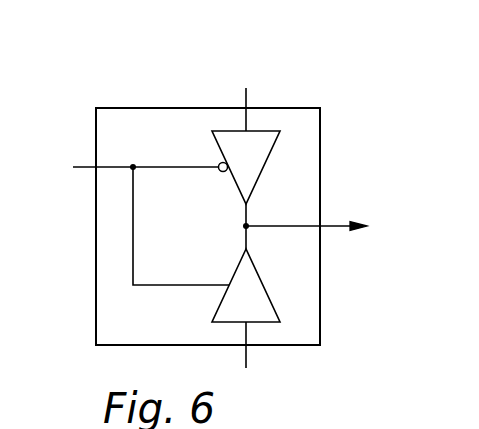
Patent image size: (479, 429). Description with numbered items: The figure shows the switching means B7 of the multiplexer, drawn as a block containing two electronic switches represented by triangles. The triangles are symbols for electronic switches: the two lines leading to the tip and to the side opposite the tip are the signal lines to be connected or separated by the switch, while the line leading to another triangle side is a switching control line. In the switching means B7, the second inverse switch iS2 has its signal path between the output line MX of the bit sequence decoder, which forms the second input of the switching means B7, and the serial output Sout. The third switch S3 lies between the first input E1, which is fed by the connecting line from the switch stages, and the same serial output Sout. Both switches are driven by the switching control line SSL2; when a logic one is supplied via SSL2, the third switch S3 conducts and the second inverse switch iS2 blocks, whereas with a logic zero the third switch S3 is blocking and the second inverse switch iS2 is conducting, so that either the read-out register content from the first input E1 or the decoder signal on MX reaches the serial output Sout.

The switching means B7 is at (294, 84).
The second inverse switch iS2 is at (257, 167).
The third switch S3 is at (254, 263).
The output line of bit sequence decoder MX is at (246, 96).
The switching control line SSL2 is at (135, 212).
The serial output Sout is at (308, 243).
The first input E1 is at (252, 362).